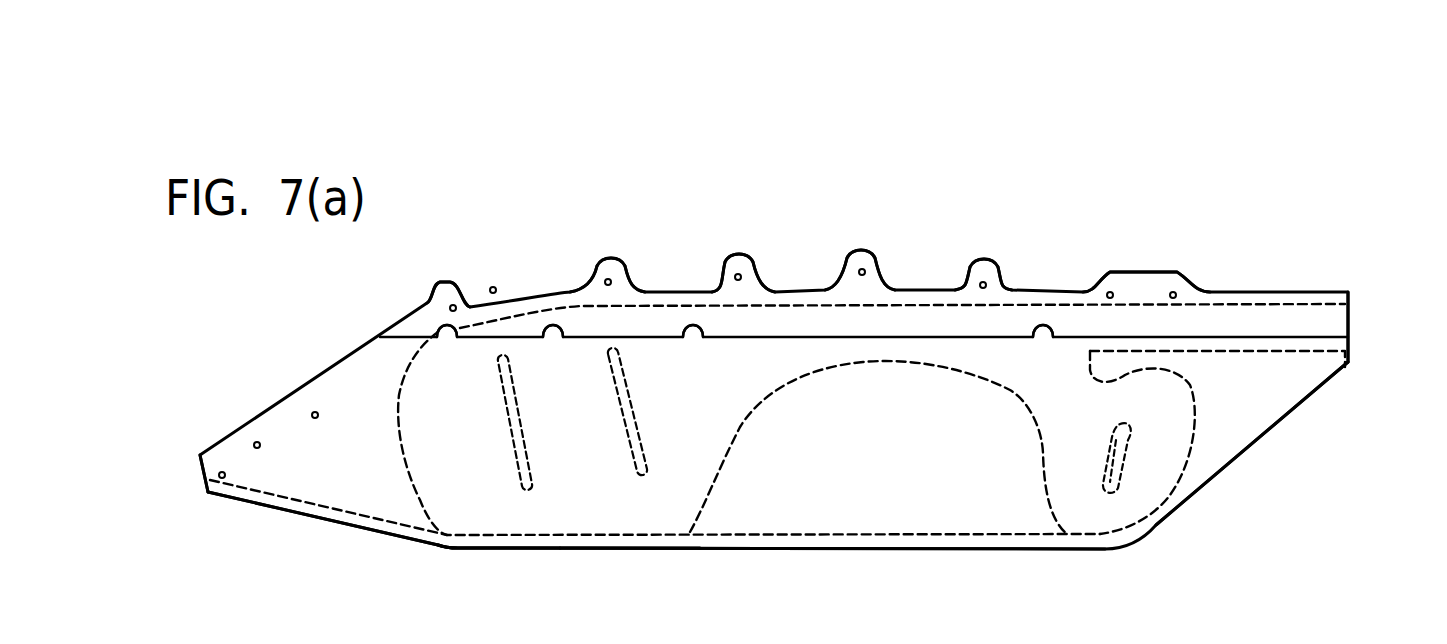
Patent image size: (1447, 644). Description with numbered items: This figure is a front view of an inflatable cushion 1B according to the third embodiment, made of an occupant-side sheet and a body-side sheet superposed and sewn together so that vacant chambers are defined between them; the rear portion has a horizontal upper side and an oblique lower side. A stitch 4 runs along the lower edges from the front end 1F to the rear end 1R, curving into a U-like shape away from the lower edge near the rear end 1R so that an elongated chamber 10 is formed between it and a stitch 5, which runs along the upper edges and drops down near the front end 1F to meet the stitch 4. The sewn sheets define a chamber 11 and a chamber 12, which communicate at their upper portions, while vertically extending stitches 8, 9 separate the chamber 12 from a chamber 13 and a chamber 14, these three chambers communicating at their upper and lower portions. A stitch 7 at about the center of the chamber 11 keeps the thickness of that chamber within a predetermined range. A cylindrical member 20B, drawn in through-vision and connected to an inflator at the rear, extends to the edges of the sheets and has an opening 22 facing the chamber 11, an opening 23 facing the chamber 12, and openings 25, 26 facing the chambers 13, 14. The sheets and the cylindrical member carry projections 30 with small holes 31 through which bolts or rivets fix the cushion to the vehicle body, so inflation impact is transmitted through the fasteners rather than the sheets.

The cushion 1B is at (692, 176).
The front end 1F is at (200, 457).
The rear end 1R is at (1350, 358).
The stitch 4 is at (340, 510).
The stitch 5 is at (830, 303).
The stitch 7 is at (1123, 453).
The stitch 8 is at (635, 423).
The stitch 9 is at (522, 422).
The chamber 10 is at (1315, 345).
The chamber 11 is at (1045, 473).
The chamber 12 is at (713, 457).
The chamber 13 is at (600, 513).
The chamber 14 is at (482, 493).
The cylindrical member 20B is at (890, 327).
The opening 22 is at (1043, 340).
The opening 23 is at (693, 338).
The opening 25 is at (553, 338).
The opening 26 is at (446, 334).
The projection 30 is at (452, 281).
The small hole 31 is at (455, 306).